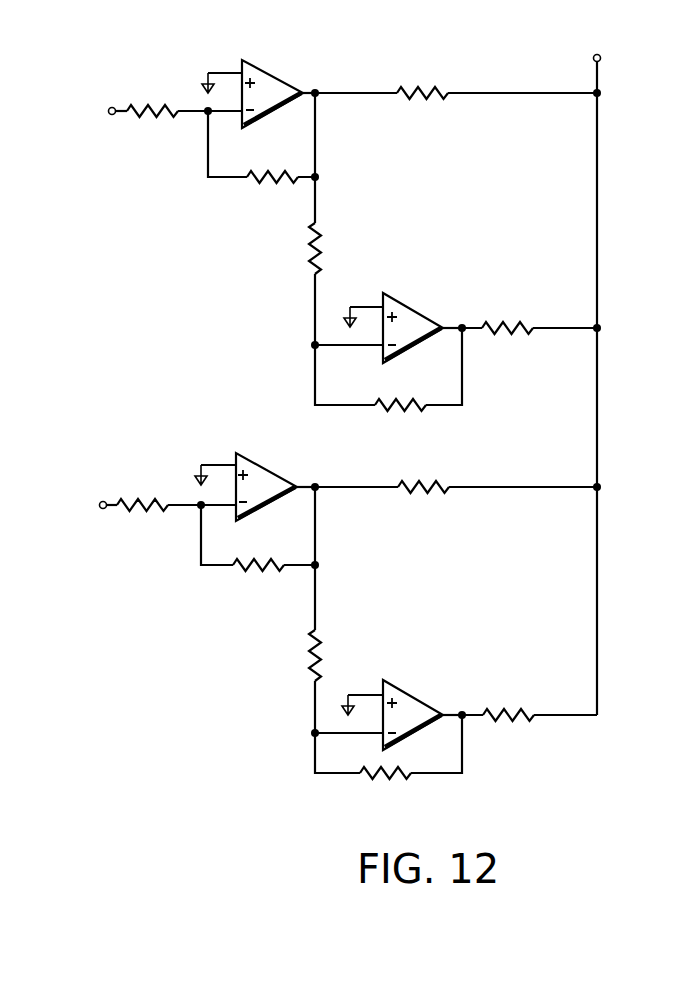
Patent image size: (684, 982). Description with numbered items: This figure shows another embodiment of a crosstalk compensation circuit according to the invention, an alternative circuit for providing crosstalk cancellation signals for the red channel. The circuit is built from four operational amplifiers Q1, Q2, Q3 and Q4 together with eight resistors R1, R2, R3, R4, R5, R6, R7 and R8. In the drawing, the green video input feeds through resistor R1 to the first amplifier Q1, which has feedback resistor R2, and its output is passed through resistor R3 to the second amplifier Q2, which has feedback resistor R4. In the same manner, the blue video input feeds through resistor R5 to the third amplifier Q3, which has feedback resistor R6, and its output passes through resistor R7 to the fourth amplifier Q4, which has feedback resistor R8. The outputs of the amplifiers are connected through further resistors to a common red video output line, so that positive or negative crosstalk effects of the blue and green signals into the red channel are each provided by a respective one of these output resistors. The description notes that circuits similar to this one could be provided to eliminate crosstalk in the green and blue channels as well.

The resistor R1 is at (184, 127).
The resistor R2 is at (263, 164).
The resistor R3 is at (296, 219).
The resistor R4 is at (388, 369).
The resistor R5 is at (176, 522).
The resistor R6 is at (260, 556).
The resistor R7 is at (296, 610).
The resistor R8 is at (388, 761).
The operational amplifier Q1 is at (262, 68).
The operational amplifier Q2 is at (404, 303).
The operational amplifier Q3 is at (266, 464).
The operational amplifier Q4 is at (403, 690).